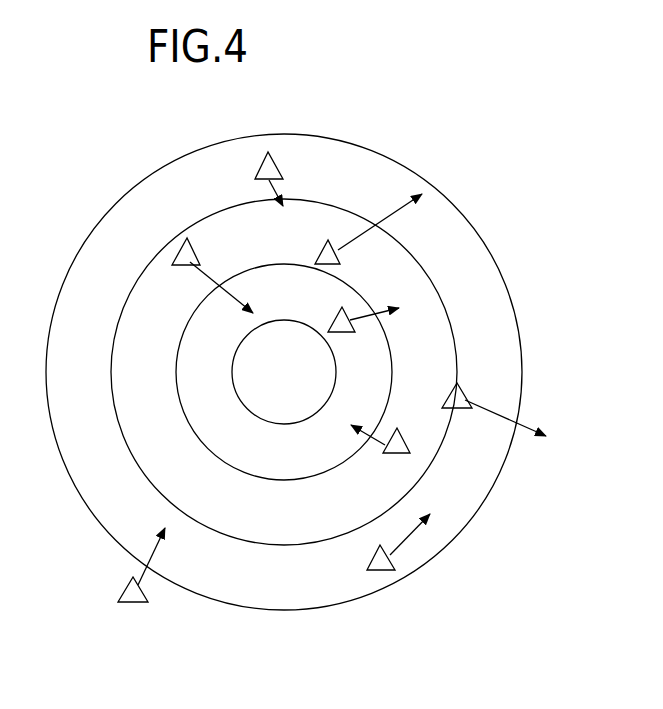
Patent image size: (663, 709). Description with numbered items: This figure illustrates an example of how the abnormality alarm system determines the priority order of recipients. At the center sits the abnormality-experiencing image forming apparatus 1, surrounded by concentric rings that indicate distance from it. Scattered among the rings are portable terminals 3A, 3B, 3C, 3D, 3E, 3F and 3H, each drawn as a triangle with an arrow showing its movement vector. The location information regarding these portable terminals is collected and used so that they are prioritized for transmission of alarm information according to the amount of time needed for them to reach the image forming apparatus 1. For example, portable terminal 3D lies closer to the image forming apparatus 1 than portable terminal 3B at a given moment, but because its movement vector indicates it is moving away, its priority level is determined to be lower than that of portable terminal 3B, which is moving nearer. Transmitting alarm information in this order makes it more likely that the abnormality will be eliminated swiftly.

The image forming apparatus 1 is at (258, 405).
The portable terminal 3A is at (277, 162).
The portable terminal 3B is at (178, 265).
The portable terminal 3C is at (320, 251).
The portable terminal 3D is at (345, 333).
The portable terminal 3E is at (453, 387).
The portable terminal 3F is at (381, 455).
The portable terminal 3H is at (122, 603).